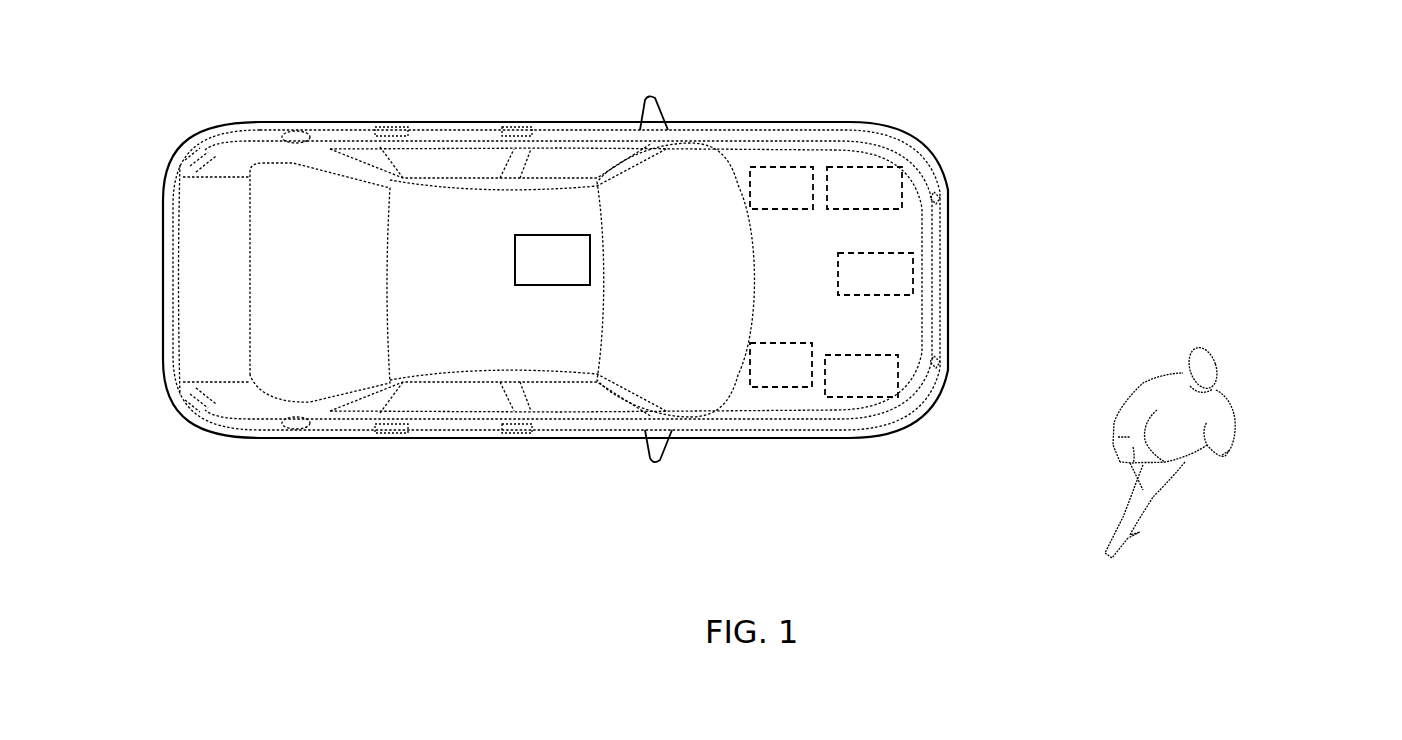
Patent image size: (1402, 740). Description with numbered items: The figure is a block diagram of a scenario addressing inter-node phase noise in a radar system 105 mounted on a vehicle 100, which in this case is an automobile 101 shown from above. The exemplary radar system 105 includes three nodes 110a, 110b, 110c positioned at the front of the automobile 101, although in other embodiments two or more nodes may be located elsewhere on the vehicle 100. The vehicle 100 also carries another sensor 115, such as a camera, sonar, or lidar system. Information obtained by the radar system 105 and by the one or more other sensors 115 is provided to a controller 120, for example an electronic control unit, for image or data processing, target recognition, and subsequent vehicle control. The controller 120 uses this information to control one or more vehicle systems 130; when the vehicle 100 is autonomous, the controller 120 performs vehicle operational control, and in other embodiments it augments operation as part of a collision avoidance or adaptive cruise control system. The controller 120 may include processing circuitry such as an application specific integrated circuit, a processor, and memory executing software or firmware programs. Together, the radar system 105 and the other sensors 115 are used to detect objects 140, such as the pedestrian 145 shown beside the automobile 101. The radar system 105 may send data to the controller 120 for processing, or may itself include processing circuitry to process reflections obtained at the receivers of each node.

The vehicle 100 is at (555, 254).
The automobile 101 is at (322, 123).
The radar system 105 is at (915, 342).
The node 110a is at (864, 188).
The node 110b is at (875, 274).
The node 110c is at (861, 376).
The sensor 115 is at (552, 260).
The controller 120 is at (781, 188).
The vehicle systems 130 is at (781, 365).
The objects 140 is at (1250, 354).
The pedestrian 145 is at (1233, 442).